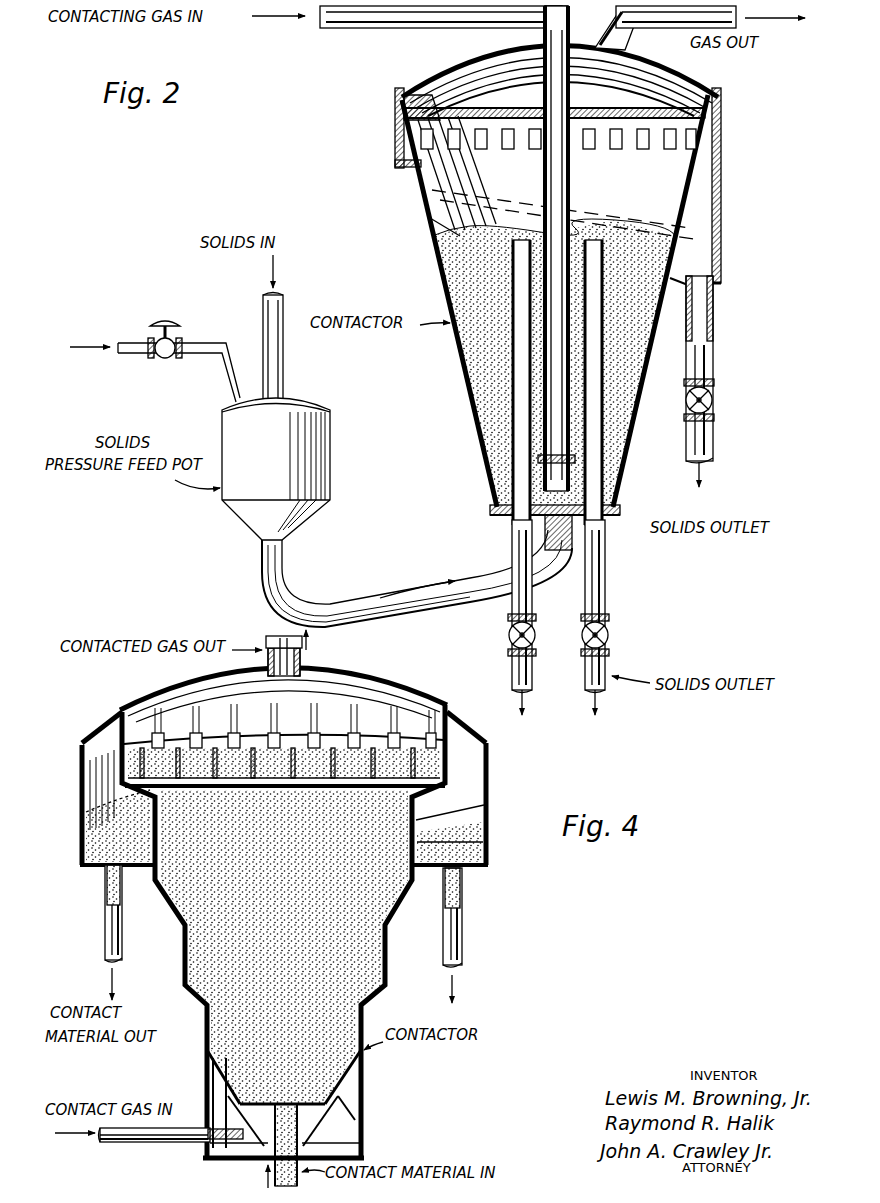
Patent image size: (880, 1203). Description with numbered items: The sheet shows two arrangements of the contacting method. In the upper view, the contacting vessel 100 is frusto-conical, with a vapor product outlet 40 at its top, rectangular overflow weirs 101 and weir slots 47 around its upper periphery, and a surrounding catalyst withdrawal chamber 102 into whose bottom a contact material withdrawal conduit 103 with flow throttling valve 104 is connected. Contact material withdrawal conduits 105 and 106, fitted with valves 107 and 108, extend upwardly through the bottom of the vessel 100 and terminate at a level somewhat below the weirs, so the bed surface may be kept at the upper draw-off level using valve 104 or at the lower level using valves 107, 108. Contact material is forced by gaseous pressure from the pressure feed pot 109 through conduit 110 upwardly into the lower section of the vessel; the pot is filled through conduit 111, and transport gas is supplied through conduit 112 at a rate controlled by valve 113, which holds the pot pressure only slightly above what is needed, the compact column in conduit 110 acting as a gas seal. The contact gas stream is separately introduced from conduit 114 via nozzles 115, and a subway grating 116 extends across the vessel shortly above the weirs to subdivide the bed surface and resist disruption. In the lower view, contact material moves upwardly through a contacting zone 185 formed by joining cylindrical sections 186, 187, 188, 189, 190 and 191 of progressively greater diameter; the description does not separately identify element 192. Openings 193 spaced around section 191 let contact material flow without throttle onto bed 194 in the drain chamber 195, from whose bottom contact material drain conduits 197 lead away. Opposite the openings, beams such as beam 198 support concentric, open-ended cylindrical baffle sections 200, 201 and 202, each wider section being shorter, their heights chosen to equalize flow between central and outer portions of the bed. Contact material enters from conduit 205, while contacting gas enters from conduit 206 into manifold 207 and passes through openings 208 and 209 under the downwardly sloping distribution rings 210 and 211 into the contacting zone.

In FIG. 2, the conduit 114 is at (362, 27).
In FIG. 2, the vapor product outlet 40 is at (640, 26).
In FIG. 4, the vapor product outlet 40 is at (302, 662).
In FIG. 2, the subway grating 116 is at (662, 110).
In FIG. 2, the weir slots 47 is at (660, 155).
In FIG. 2, the catalyst withdrawal chamber 102 is at (720, 190).
In FIG. 2, the overflow weirs 101 is at (395, 154).
In FIG. 2, the contacting vessel 100 is at (428, 207).
In FIG. 2, the conduit 112 is at (205, 344).
In FIG. 2, the valve 113 is at (165, 360).
In FIG. 2, the conduit 111 is at (280, 372).
In FIG. 2, the pressure feed pot 109 is at (320, 464).
In FIG. 2, the nozzles 115 is at (540, 460).
In FIG. 2, the conduit 110 is at (358, 602).
In FIG. 2, the contact material withdrawal conduit 105 is at (600, 580).
In FIG. 2, the valve 107 is at (508, 636).
In FIG. 2, the valve 108 is at (609, 636).
In FIG. 2, the contact material withdrawal conduit 106 is at (512, 665).
In FIG. 2, the contact material withdrawal conduit 103 is at (706, 358).
In FIG. 2, the flow throttling valve 104 is at (714, 400).
In FIG. 4, the openings 193 is at (116, 732).
In FIG. 4, the drain chamber 195 is at (80, 748).
In FIG. 4, the bed 194 is at (88, 846).
In FIG. 4, the cylindrical baffle section 200 is at (325, 746).
In FIG. 4, the contacting vessel 185 is at (394, 693).
In FIG. 4, the cylindrical baffle section 201 is at (360, 748).
In FIG. 4, the cylindrical baffle section 202 is at (440, 732).
In FIG. 4, the cylindrical section 191 is at (450, 778).
In FIG. 4, the outer shell wall 192 is at (488, 795).
In FIG. 4, the cylindrical section 190 is at (470, 842).
In FIG. 4, the beam 198 is at (284, 790).
In FIG. 4, the contact material drain conduits 197 is at (104, 927).
In FIG. 4, the cylindrical section 189 is at (160, 908).
In FIG. 4, the cylindrical section 188 is at (185, 965).
In FIG. 4, the cylindrical section 187 is at (212, 1038).
In FIG. 4, the cylindrical section 186 is at (212, 1082).
In FIG. 4, the opening 209 is at (220, 1106).
In FIG. 4, the distribution ring 211 is at (345, 1086).
In FIG. 4, the manifold 207 is at (352, 1132).
In FIG. 4, the opening 208 is at (352, 1141).
In FIG. 4, the distribution ring 210 is at (208, 1146).
In FIG. 4, the conduit 205 is at (266, 1172).
In FIG. 4, the conduit 206 is at (115, 1140).